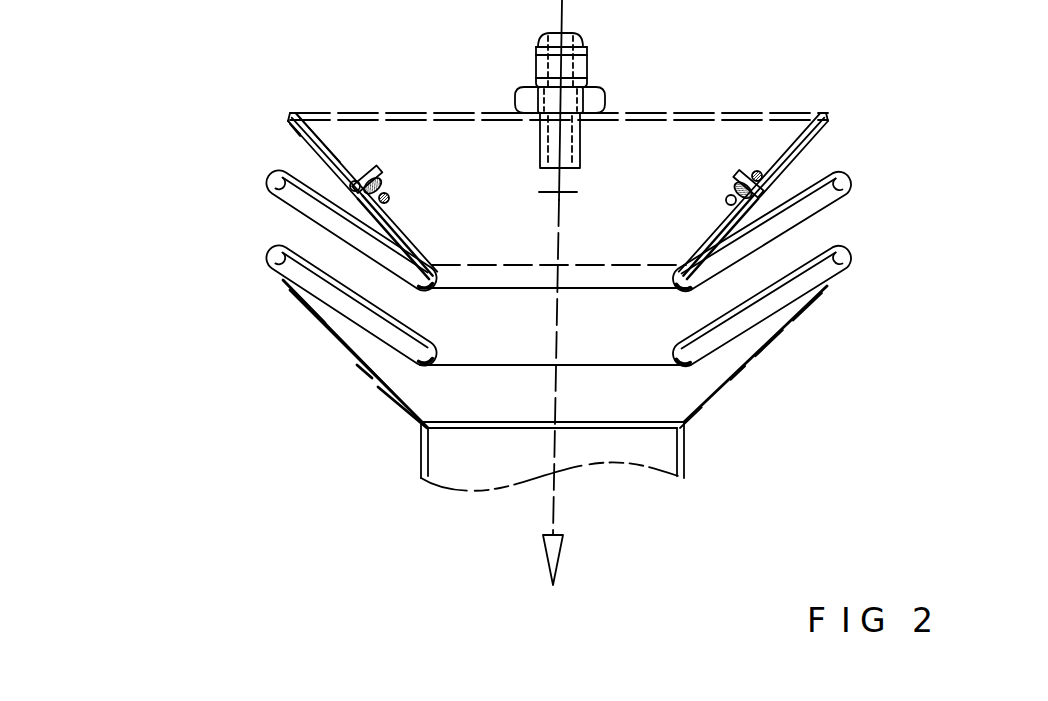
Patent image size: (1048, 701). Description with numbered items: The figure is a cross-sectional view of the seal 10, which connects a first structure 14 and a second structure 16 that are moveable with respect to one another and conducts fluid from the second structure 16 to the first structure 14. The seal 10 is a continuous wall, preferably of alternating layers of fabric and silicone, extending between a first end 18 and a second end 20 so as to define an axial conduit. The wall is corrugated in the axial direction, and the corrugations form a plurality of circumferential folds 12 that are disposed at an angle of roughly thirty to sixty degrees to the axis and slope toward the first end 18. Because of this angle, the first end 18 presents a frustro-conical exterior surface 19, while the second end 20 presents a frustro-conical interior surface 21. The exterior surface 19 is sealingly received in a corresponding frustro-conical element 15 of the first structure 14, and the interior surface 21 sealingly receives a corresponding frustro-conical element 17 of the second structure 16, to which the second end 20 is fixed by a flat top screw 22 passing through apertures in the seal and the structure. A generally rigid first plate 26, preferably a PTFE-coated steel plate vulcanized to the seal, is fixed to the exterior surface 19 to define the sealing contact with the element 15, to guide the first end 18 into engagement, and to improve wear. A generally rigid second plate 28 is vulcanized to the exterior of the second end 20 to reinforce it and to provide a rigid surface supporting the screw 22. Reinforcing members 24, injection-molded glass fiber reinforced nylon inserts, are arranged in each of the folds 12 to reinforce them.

The seal 10 is at (785, 292).
The circumferential folds 12 is at (485, 268).
The first structure 14 is at (507, 496).
The frustro-conical element 15 is at (312, 393).
The second structure 16 is at (511, 153).
The frustro-conical element 17 is at (372, 99).
The first end 18 is at (494, 354).
The frustro-conical exterior surface 19 is at (703, 310).
The second end 20 is at (753, 100).
The frustro-conical interior surface 21 is at (290, 130).
The flat top screw 22 is at (557, 141).
The reinforcing members 24 is at (404, 279).
The first plate 26 is at (251, 341).
The second plate 28 is at (227, 146).